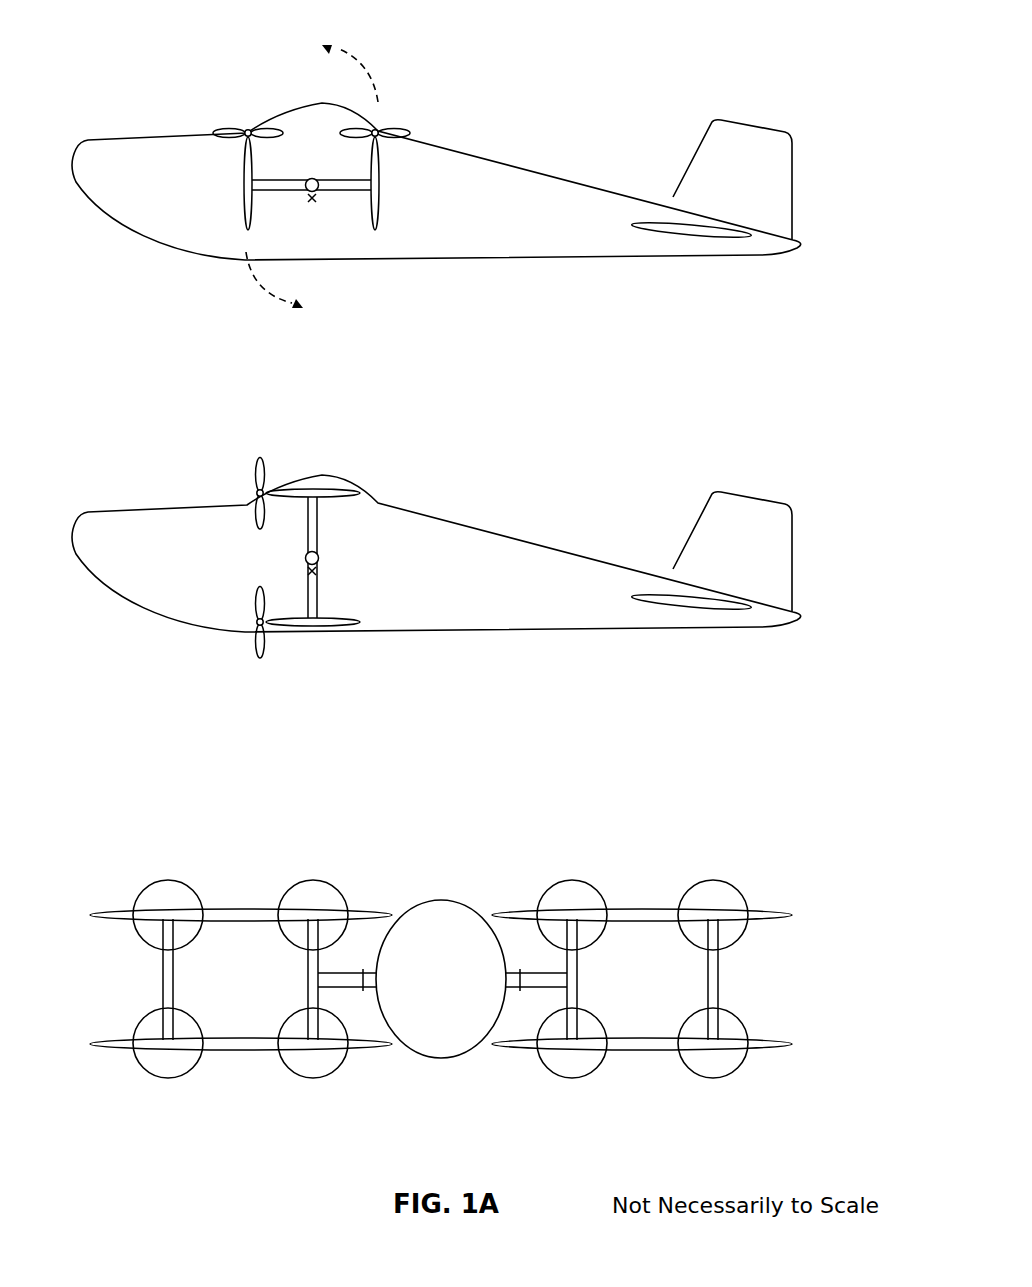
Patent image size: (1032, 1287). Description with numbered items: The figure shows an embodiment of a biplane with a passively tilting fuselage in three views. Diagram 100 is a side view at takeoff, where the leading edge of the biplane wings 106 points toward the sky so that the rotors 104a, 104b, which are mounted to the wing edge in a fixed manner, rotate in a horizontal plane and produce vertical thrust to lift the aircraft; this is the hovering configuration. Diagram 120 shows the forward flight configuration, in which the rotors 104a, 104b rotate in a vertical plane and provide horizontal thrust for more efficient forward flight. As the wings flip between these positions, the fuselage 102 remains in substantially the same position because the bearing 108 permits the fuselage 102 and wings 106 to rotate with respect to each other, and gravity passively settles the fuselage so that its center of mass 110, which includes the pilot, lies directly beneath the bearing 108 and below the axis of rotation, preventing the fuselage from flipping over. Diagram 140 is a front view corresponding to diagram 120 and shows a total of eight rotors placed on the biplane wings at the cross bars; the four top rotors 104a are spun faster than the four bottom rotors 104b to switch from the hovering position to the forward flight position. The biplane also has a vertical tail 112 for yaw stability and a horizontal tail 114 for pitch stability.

The diagram of hovering configuration 100 is at (698, 30).
The fuselage 102 is at (543, 161).
The top rotors 104a is at (397, 128).
The bottom rotors 104b is at (235, 130).
The biplane wings 106 is at (384, 183).
The bearing 108 is at (312, 177).
The center of mass 110 is at (316, 202).
The vertical tail 112 is at (756, 129).
The horizontal tail 114 is at (693, 236).
The diagram of forward flight configuration 120 is at (698, 402).
The diagram of front view 140 is at (698, 774).